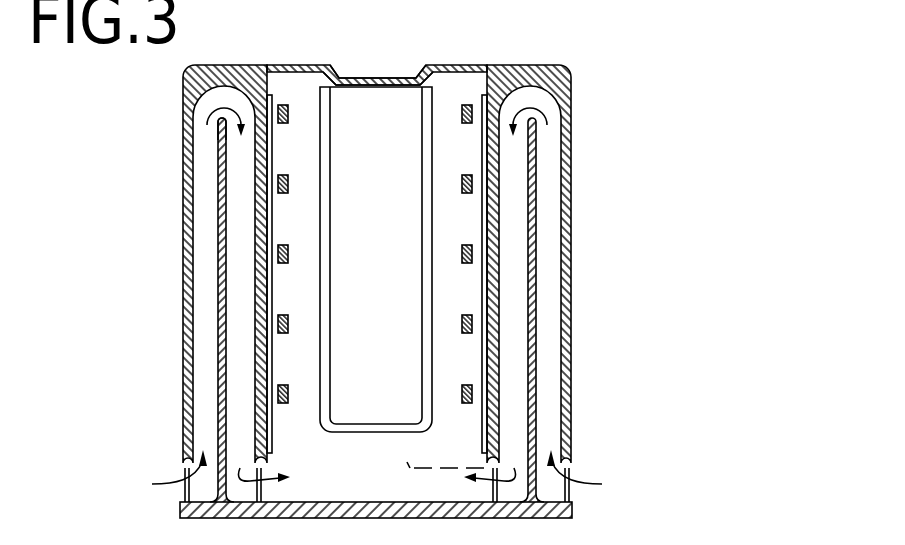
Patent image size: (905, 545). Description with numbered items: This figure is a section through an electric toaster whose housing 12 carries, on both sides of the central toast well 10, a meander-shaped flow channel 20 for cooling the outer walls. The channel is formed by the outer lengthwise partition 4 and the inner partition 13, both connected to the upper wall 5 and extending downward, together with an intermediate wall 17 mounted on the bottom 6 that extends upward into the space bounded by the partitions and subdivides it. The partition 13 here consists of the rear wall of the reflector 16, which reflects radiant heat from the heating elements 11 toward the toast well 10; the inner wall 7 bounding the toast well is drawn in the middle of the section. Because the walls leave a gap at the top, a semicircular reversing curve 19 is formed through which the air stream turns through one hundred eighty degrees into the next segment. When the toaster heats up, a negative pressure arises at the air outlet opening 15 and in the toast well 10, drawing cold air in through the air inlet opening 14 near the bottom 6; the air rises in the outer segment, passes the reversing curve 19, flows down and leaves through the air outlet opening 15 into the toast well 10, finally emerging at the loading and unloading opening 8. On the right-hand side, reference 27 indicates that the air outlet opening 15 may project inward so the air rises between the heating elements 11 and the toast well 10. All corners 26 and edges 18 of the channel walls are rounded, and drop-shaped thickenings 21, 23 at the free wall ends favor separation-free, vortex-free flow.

The partition 4 is at (183, 284).
The upper wall 5 is at (248, 65).
The bottom 6 is at (317, 506).
The central tube 7 is at (324, 195).
The loading and unloading opening 8 is at (385, 77).
The toast well 10 is at (355, 128).
The heating elements 11 is at (282, 244).
The housing 12 is at (548, 72).
The partition 13 is at (256, 218).
The air inlet opening 14 is at (568, 470).
The air outlet opening 15 is at (241, 480).
The reflector 16 is at (272, 438).
The intermediate wall 17 is at (222, 248).
The edges 18 is at (205, 495).
The reversing curve 19 is at (219, 82).
The flow channel 20 is at (200, 181).
The drop-shaped thickening 21 is at (183, 465).
The drop-shaped thickening 23 is at (221, 119).
The corners 26 is at (262, 467).
The projecting air outlet opening 27 is at (434, 470).